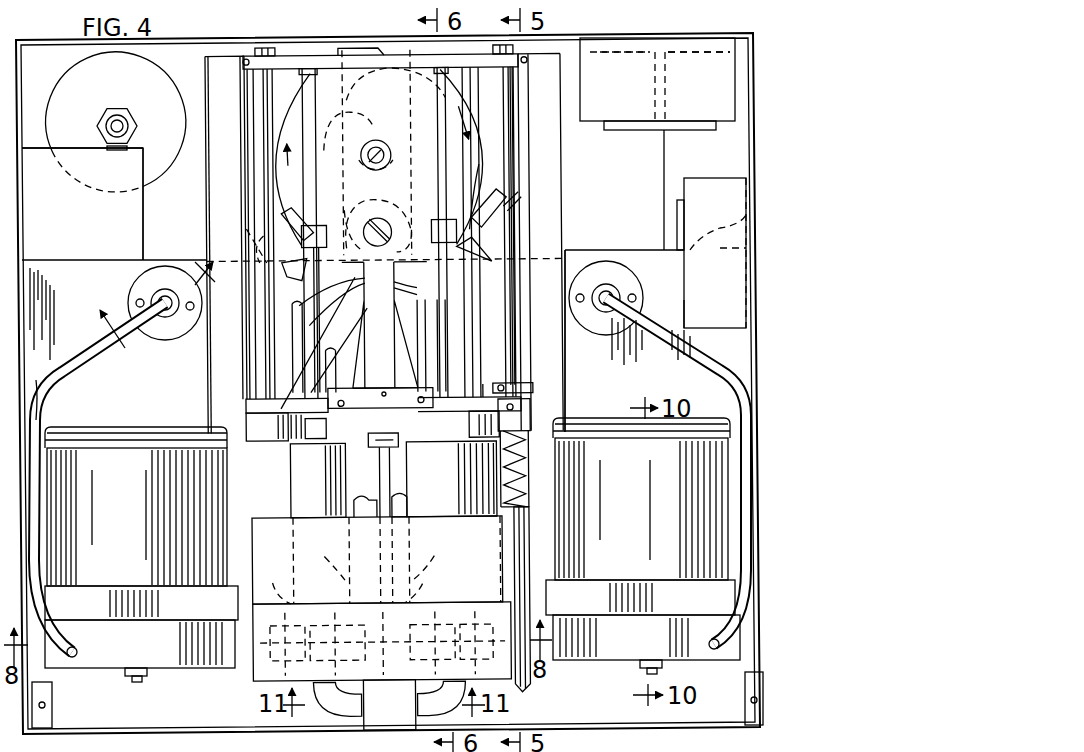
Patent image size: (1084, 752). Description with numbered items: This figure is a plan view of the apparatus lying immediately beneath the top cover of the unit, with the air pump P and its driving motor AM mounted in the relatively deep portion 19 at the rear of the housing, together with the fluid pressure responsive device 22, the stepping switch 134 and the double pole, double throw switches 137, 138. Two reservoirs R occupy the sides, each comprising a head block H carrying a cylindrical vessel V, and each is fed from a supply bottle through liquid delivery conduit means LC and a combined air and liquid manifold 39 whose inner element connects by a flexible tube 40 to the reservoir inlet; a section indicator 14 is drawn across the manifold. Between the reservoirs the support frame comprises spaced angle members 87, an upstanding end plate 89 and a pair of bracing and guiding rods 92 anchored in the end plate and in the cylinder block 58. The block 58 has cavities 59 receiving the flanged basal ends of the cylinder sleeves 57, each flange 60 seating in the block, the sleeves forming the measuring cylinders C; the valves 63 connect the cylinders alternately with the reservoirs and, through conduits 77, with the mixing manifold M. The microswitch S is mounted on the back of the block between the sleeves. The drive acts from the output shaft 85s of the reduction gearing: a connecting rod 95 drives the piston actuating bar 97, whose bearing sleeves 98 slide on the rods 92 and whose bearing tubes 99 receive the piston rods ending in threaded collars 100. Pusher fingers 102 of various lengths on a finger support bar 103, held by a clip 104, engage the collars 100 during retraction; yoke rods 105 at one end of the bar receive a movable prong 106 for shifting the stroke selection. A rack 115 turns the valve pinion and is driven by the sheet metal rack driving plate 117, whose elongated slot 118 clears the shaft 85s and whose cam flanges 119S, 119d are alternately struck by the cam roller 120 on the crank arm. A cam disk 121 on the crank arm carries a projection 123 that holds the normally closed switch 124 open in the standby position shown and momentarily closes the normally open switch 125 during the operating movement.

The fluid pressure responsive device 22 is at (63, 94).
The relatively deep portion 19 is at (178, 252).
The multiple position stepping switch 134 is at (85, 243).
The section line 14 is at (168, 315).
The combined air and liquid manifold 39 is at (152, 345).
The flexible tube 40 is at (84, 352).
The liquid delivery conduit means LC is at (63, 376).
The vessel V is at (76, 440).
The reservoir R is at (136, 506).
The block H is at (165, 636).
The double pole, double throw switch 137 is at (657, 84).
The double pole, double throw switch 138 is at (711, 253).
The driving motor AM is at (632, 76).
The air pump P is at (696, 66).
The bracing and guiding rods 92 is at (256, 139).
The angle members 87 is at (222, 366).
The frame end plate 89 is at (470, 68).
The cam disk 121 is at (473, 156).
The cam actuating projection 123 is at (490, 192).
The normally closed switch 124 is at (505, 220).
The normally open switch 125 is at (262, 250).
The cam flange 119d is at (408, 76).
The rack driving plate 117 is at (343, 136).
The elongated slot 118 is at (404, 154).
The power output shaft 85s is at (370, 162).
The cam flange 119S is at (350, 214).
The cam roller 120 is at (423, 215).
The threaded collar 100 is at (305, 225).
The connecting rod 95 is at (388, 356).
The pusher fingers 102 is at (349, 340).
The bearing sleeves 98 is at (246, 418).
The bracket or clip 104 is at (405, 404).
The movable prong 106 is at (512, 388).
The finger support bar 103 is at (480, 386).
The yoke rods 105 is at (522, 391).
The piston actuating bar 97 is at (472, 404).
The bearing tubes 99 is at (287, 426).
The cylinder sleeves 57 is at (318, 480).
The measuring cylinders C is at (400, 472).
The rack 115 is at (386, 486).
The microswitch S is at (362, 520).
The cylinder block 58 is at (377, 560).
The cavities 59 is at (326, 557).
The peripheral flange 60 is at (273, 582).
The valves 63 is at (330, 605).
The mixing manifold M is at (389, 705).
The conduits 77 is at (330, 718).